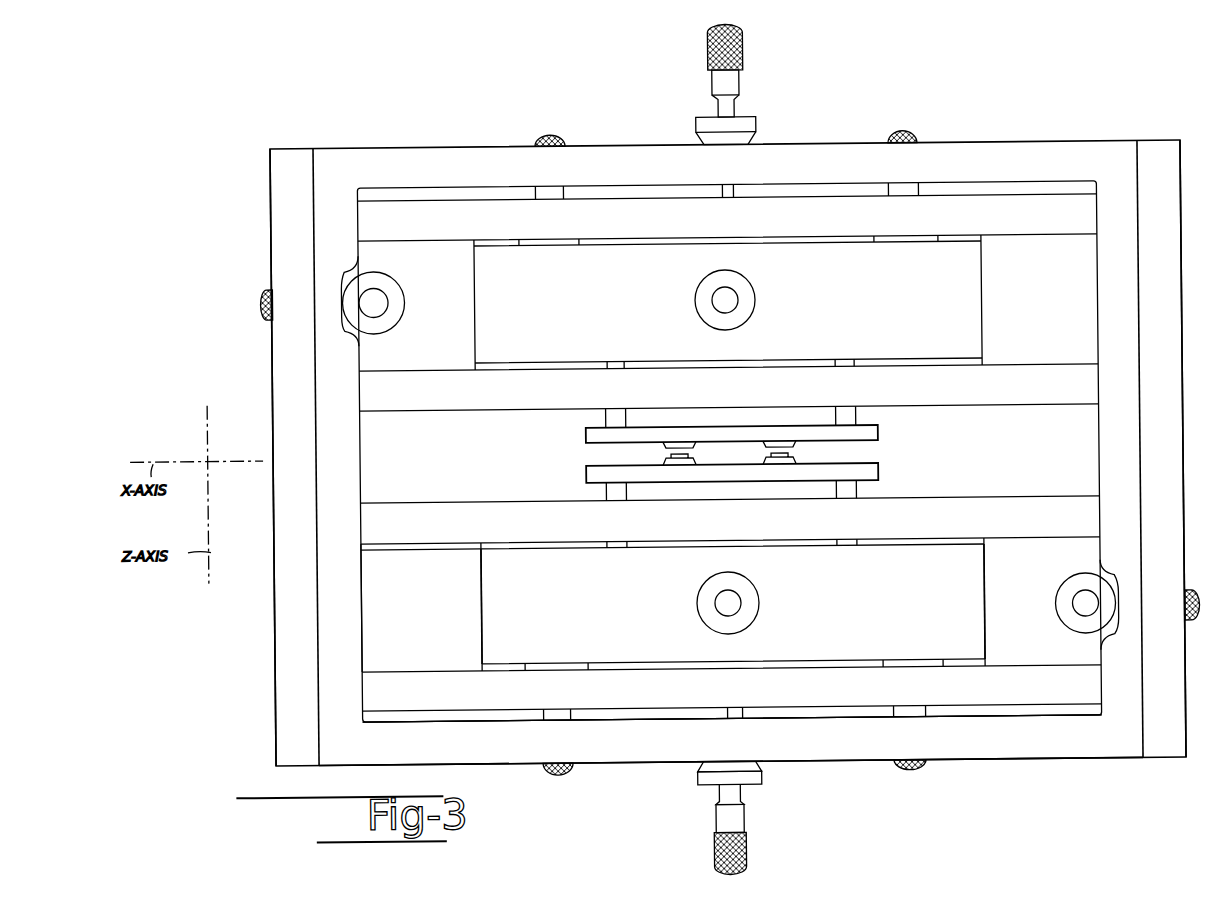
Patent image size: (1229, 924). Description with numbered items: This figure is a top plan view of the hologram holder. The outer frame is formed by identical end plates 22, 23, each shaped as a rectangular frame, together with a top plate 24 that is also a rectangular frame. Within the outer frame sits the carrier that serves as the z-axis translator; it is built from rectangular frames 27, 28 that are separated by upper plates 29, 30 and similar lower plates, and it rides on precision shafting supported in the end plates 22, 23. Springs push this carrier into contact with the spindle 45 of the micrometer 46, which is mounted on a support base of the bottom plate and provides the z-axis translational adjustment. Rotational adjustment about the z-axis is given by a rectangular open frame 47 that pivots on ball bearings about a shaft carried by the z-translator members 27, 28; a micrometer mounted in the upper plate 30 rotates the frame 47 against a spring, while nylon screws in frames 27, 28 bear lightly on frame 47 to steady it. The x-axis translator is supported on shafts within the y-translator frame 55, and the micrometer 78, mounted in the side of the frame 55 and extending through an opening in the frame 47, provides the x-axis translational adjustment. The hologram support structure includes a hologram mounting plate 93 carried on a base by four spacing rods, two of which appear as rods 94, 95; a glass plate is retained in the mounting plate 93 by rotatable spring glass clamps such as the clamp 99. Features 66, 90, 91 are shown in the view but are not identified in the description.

The end plate 22 is at (288, 622).
The end plate 23 is at (1162, 463).
The top plate 24 is at (1060, 750).
The rectangular frame 27 is at (414, 690).
The rectangular frame 28 is at (416, 531).
The upper plate 29 is at (455, 613).
The upper plate 30 is at (990, 612).
The spindle 45 is at (716, 720).
The micrometer 46 is at (707, 854).
The rectangular open frame 47 is at (740, 587).
The y-translator frame 55 is at (1067, 610).
The center bore 66 is at (737, 608).
The micrometer 78 is at (1188, 599).
The clamp screw 90 is at (550, 778).
The clamp screw 91 is at (897, 776).
The hologram mounting plate 93 is at (580, 475).
The spacing rod 94 is at (602, 493).
The spacing rod 95 is at (840, 496).
The clamp 99 is at (795, 466).